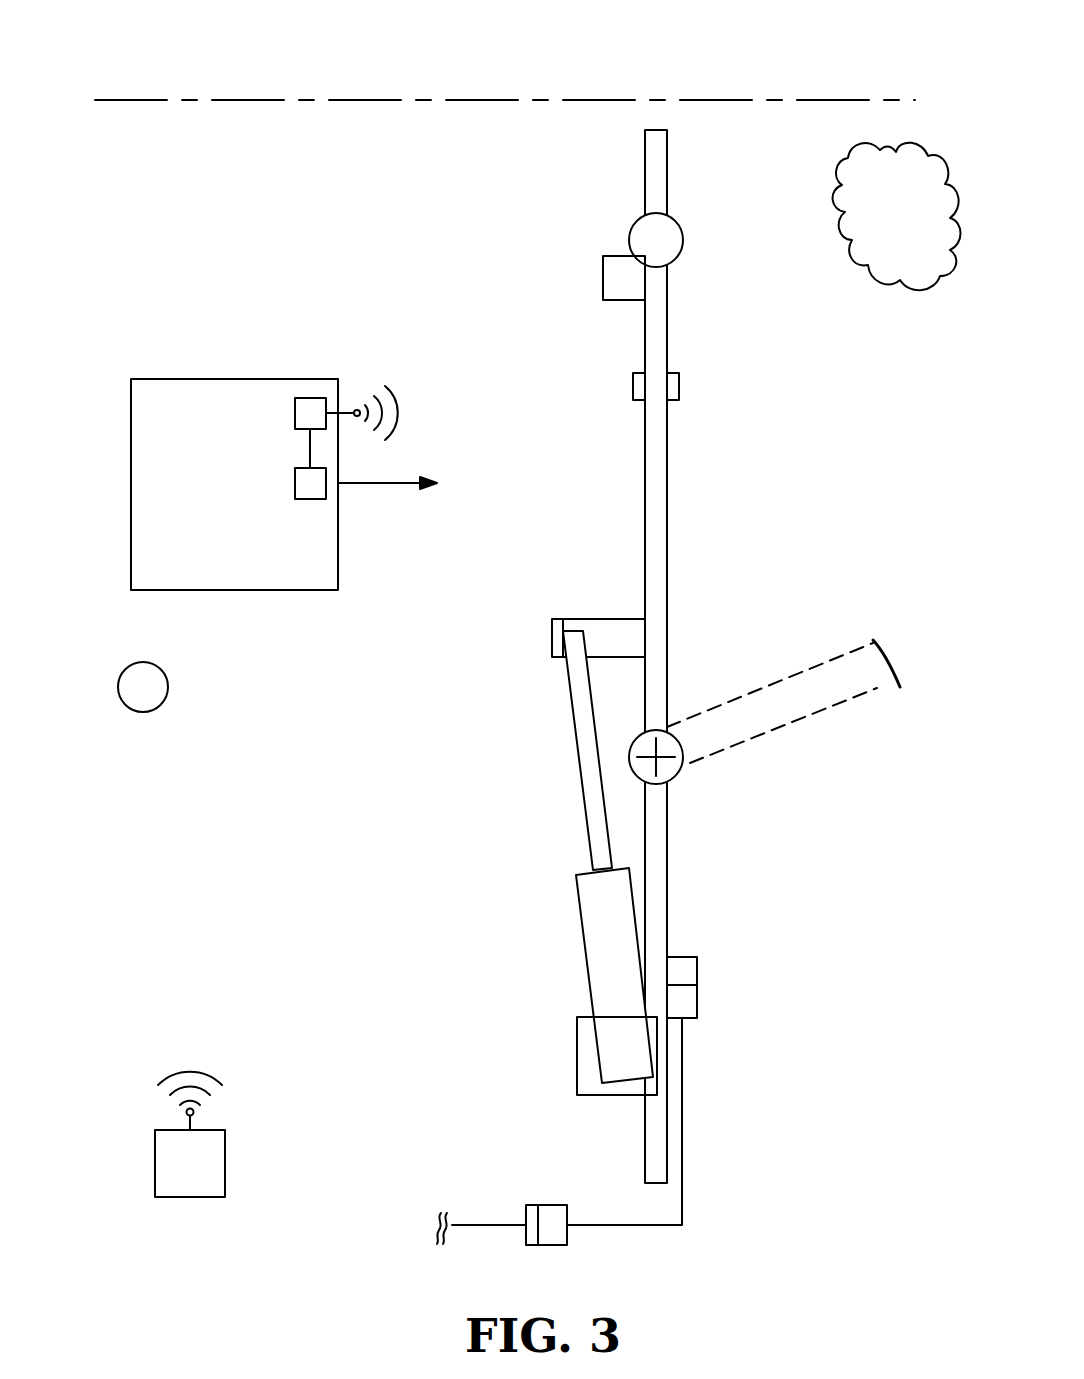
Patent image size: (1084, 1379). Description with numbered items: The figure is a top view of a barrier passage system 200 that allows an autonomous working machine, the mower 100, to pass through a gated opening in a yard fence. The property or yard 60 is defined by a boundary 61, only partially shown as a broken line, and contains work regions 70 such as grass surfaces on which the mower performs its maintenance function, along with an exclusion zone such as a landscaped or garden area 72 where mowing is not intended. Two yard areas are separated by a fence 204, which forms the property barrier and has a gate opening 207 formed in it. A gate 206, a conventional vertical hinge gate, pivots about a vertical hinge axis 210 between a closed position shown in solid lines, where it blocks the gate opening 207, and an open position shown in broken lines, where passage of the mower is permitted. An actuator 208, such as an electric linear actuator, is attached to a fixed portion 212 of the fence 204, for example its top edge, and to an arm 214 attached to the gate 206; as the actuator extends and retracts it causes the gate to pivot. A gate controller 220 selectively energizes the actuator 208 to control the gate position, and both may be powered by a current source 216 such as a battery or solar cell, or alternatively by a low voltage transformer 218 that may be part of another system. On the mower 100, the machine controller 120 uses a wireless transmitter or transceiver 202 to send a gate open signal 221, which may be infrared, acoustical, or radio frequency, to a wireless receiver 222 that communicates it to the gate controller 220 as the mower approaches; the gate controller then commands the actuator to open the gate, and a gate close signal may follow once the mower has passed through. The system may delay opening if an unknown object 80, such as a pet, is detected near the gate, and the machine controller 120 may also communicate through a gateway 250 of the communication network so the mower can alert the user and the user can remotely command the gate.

The property or yard 60 is at (135, 222).
The boundary 61 is at (361, 99).
The work region 70 is at (845, 465).
The landscaped or garden area 72 is at (928, 290).
The unknown object 80 is at (168, 687).
The mower 100 is at (213, 379).
The machine controller 120 is at (295, 483).
The barrier passage system 200 is at (572, 607).
The wireless transmitter or transceiver 202 is at (313, 398).
The fence 204 is at (667, 160).
The gate 206 is at (667, 632).
The gate opening 207 is at (615, 333).
The actuator 208 is at (590, 945).
The vertical hinge axis 210 is at (629, 757).
The fixed portion of the fence 212 is at (577, 1055).
The arm 214 is at (552, 634).
The current source 216 is at (697, 1003).
The low voltage transformer 218 is at (547, 1205).
The gate controller 220 is at (697, 963).
The gate open signal 221 is at (400, 413).
The wireless receiver 222 is at (640, 373).
The gateway 250 is at (190, 1198).